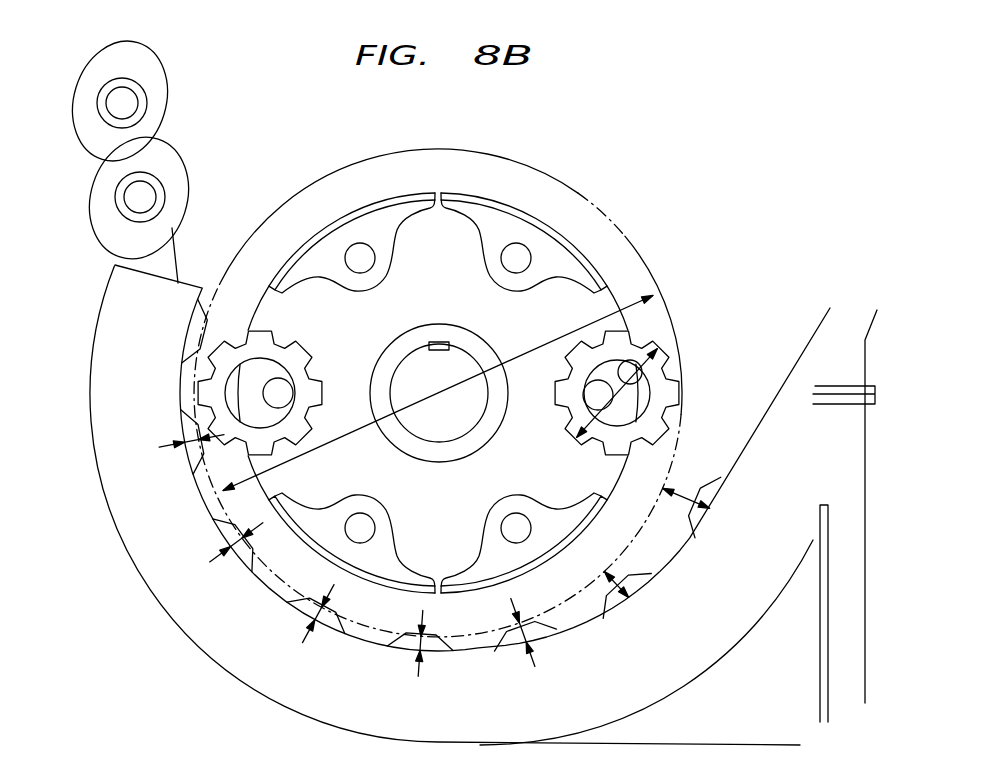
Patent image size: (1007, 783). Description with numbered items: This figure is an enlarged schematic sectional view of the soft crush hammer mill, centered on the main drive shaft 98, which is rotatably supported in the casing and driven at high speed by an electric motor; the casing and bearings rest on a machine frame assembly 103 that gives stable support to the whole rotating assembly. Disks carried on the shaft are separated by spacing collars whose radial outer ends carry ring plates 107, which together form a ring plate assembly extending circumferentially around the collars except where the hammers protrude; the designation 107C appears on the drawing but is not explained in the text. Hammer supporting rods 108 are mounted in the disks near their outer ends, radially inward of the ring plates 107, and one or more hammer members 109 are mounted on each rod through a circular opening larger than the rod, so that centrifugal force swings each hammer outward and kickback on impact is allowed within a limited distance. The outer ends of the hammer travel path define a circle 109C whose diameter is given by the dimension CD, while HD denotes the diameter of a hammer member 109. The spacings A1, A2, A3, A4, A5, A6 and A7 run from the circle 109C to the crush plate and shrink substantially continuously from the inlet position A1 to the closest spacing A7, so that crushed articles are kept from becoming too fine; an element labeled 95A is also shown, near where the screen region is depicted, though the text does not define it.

The machine frame assembly 103 is at (133, 545).
The guide rollers 95A is at (167, 117).
The circle 109C is at (570, 188).
The ring plates 107 is at (387, 228).
The pawl outer surface 107C is at (637, 270).
The hammer supporting rods 108 is at (376, 260).
The hammer members 109 is at (265, 347).
The main drive shaft 98 is at (453, 432).
The diameter of circle 109C CD is at (513, 359).
The diameter of hammer member HD is at (640, 350).
The spacing at inlet position A1 is at (684, 499).
The spacing A2 is at (617, 582).
The spacing A3 is at (531, 636).
The spacing A4 is at (420, 641).
The spacing A5 is at (320, 622).
The spacing A6 is at (246, 546).
The closest spacing A7 is at (193, 444).